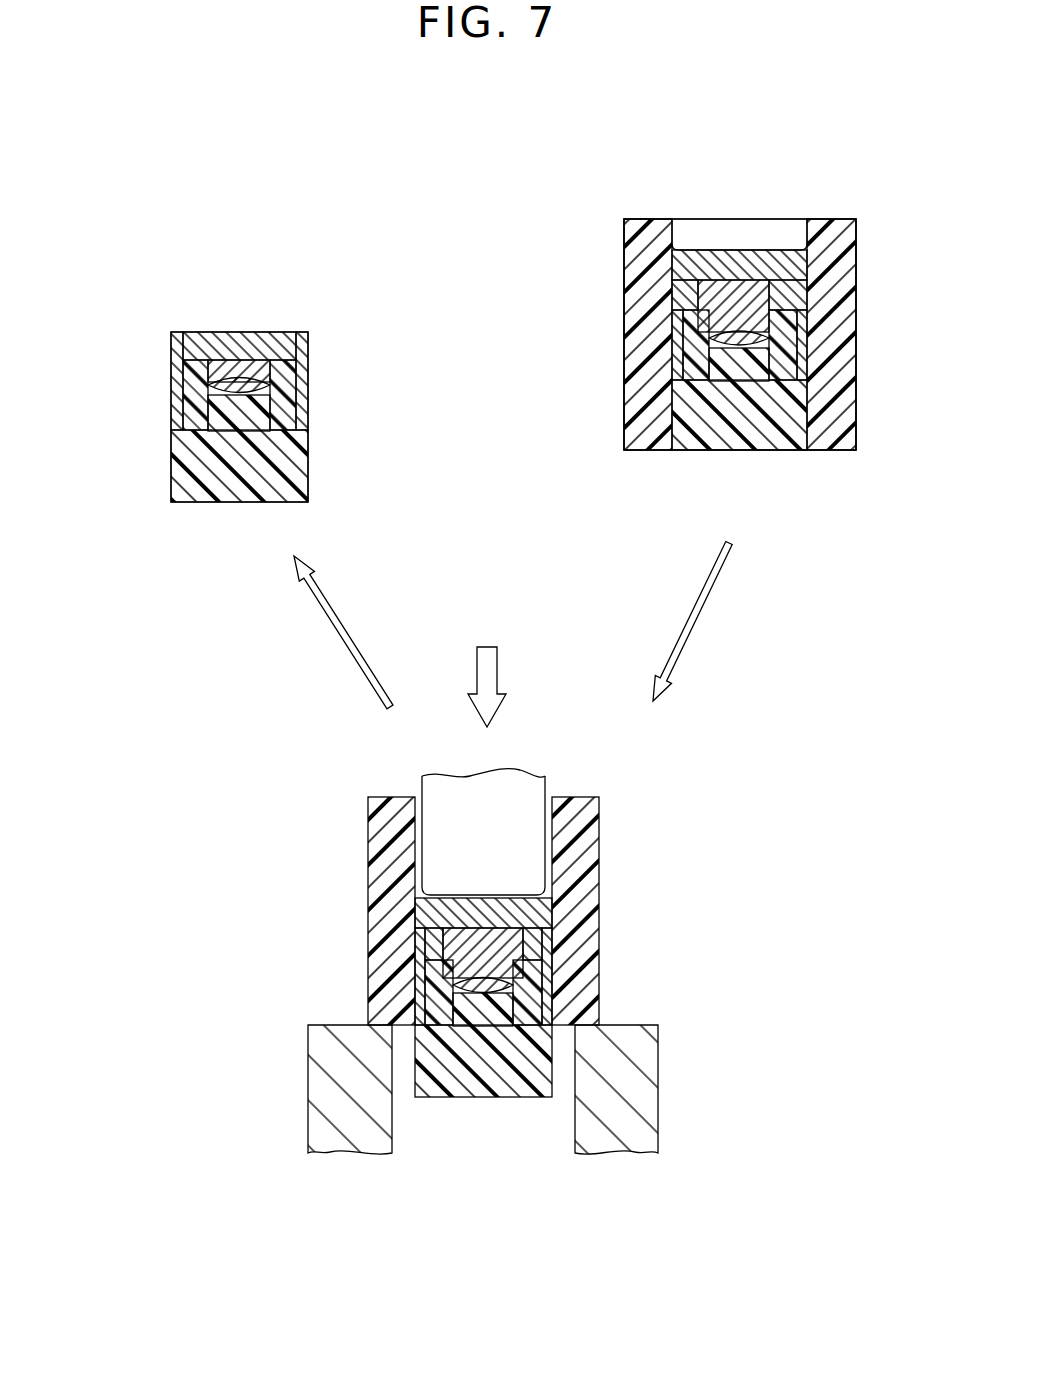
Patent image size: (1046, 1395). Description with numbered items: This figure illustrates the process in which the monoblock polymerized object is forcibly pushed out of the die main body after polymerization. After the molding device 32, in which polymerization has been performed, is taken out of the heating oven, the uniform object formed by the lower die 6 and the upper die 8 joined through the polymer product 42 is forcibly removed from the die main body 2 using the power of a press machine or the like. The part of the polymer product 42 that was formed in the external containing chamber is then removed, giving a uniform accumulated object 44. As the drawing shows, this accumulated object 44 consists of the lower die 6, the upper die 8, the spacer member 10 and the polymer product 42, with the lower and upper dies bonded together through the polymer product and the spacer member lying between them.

The die main body 2 is at (635, 332).
The lower die 6 is at (258, 480).
The upper die 8 is at (238, 348).
The spacer member 10 is at (302, 383).
The molding device 32 is at (877, 228).
The polymer product 42 is at (188, 402).
The accumulated object 44 is at (198, 317).